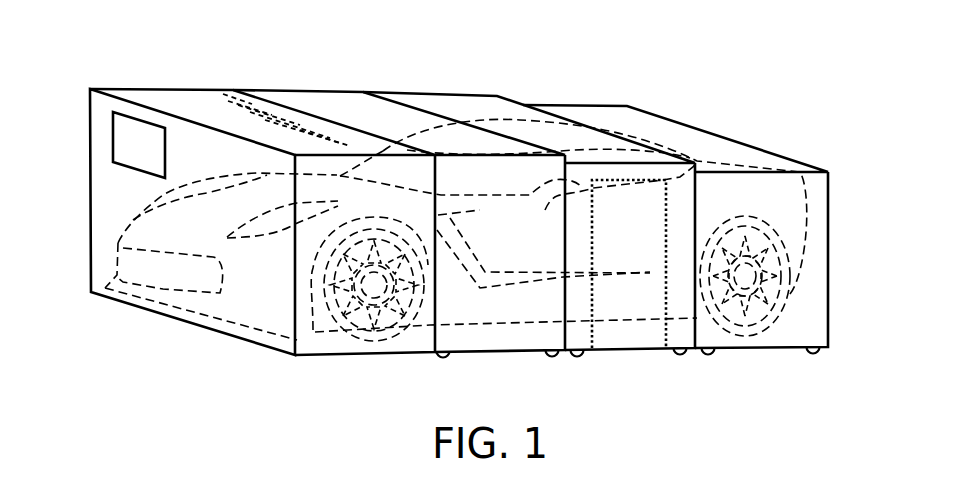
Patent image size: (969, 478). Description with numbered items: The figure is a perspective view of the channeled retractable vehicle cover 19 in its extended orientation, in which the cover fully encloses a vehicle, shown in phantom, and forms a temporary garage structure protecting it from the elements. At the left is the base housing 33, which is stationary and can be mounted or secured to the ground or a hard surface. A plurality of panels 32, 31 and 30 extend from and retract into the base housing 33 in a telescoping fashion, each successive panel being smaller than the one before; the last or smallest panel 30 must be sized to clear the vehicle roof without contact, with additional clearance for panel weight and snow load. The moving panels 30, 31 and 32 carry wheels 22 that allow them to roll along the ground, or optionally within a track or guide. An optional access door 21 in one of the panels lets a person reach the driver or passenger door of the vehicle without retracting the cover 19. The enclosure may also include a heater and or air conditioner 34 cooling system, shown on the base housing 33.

The channeled retractable vehicle cover 19 is at (583, 40).
The access door 21 is at (663, 303).
The wheels 22 is at (715, 354).
The panel 30 is at (656, 114).
The panel 31 is at (437, 97).
The panel 32 is at (306, 90).
The base housing 33 is at (183, 90).
The heater and or air conditioner 34 is at (110, 145).